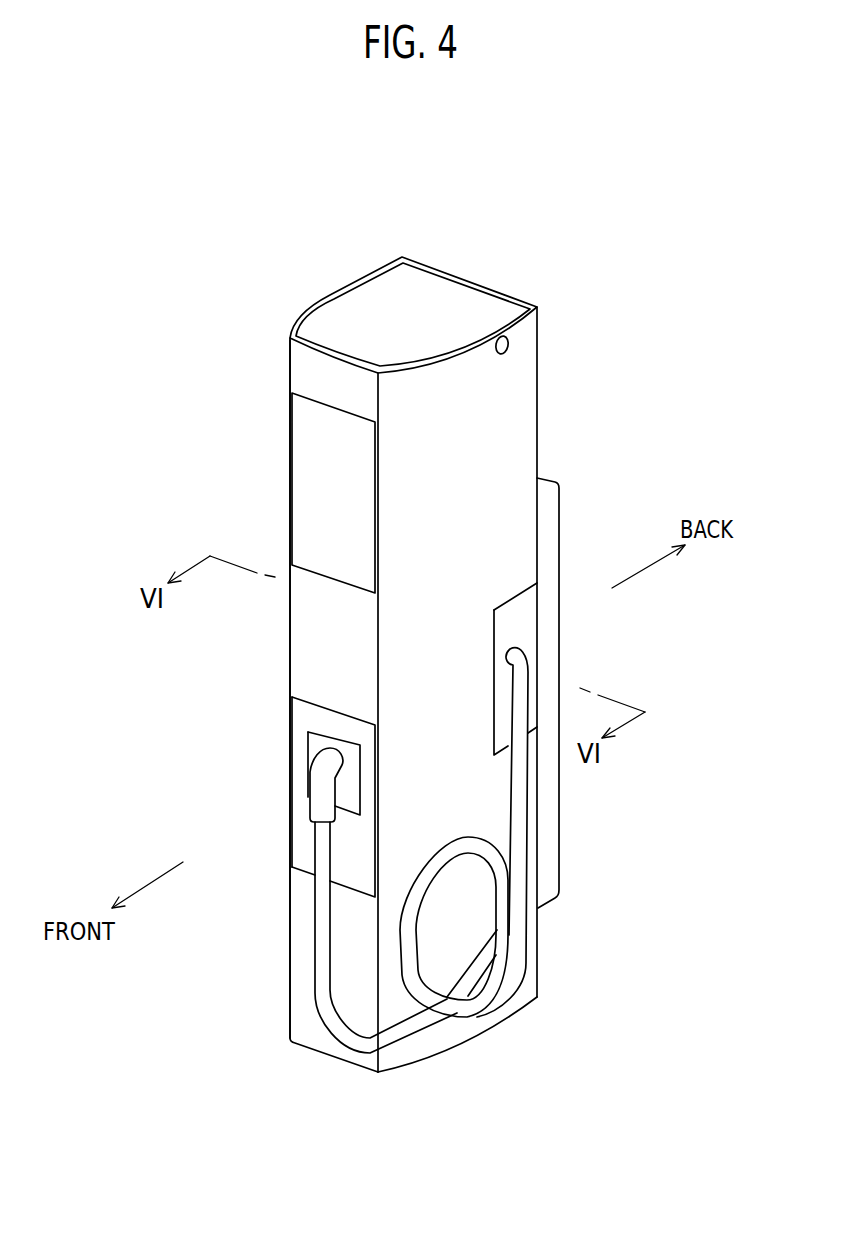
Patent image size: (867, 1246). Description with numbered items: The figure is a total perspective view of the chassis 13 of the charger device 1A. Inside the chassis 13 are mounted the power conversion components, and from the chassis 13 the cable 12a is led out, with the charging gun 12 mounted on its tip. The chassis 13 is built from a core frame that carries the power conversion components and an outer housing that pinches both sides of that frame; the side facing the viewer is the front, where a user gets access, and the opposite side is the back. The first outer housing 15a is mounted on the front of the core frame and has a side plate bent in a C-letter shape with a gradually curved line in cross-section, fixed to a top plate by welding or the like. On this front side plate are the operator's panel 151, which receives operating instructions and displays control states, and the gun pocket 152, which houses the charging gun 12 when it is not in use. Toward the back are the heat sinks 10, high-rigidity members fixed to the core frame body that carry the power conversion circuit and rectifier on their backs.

The charger device 1A is at (412, 588).
The heat sink 10 is at (550, 522).
The charging gun 12 is at (320, 792).
The cable 12a is at (317, 993).
The chassis 13 is at (358, 263).
The first outer housing 15a is at (307, 368).
The operator's panel 151 is at (303, 482).
The gun pocket 152 is at (315, 742).